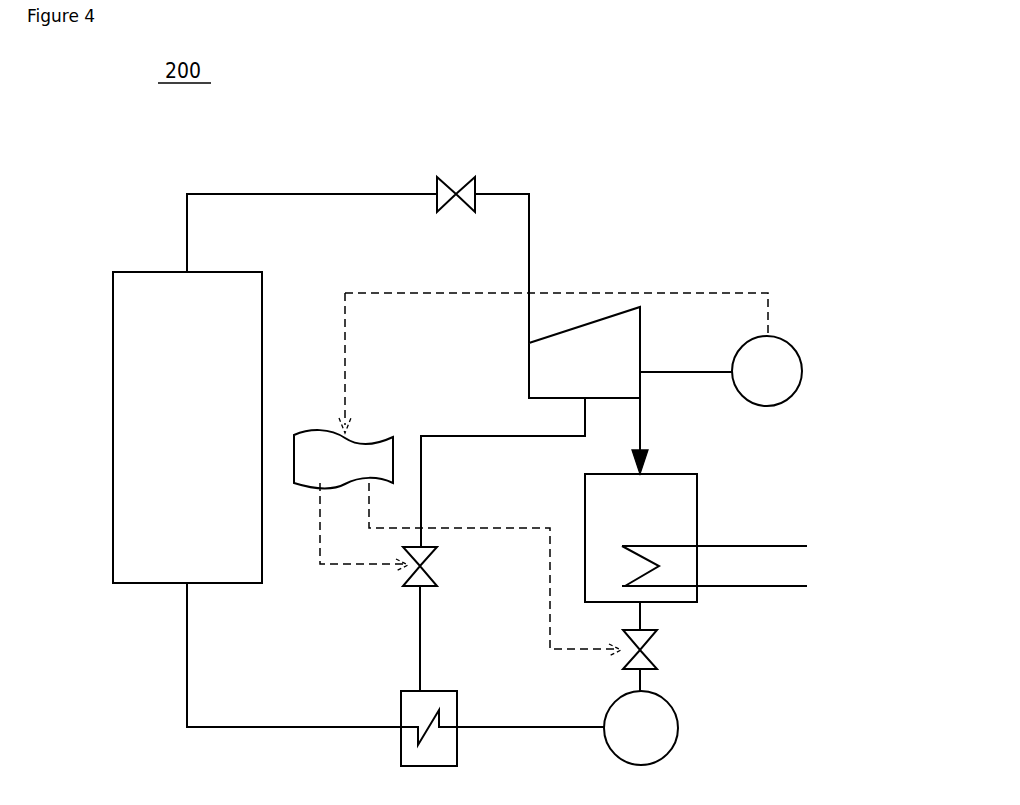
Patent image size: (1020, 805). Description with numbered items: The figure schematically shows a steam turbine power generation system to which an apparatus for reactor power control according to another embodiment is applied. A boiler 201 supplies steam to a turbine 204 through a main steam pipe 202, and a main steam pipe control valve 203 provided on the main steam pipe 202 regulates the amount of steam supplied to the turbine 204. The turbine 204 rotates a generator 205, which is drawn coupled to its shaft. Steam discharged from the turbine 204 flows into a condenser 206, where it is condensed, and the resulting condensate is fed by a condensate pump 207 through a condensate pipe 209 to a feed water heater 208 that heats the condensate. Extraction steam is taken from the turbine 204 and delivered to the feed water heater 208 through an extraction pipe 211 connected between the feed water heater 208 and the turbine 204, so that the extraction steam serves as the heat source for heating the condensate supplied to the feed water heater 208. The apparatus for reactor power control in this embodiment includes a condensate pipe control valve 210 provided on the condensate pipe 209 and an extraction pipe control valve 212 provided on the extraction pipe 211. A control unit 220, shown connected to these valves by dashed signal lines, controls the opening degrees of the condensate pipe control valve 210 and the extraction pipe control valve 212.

The boiler 201 is at (113, 425).
The main steam pipe 202 is at (310, 193).
The main steam pipe control valve 203 is at (448, 177).
The turbine 204 is at (641, 318).
The generator 205 is at (810, 366).
The condenser 206 is at (697, 491).
The condensate pump 207 is at (678, 725).
The feed water heater 208 is at (401, 705).
The condensate pipe 209 is at (641, 616).
The condensate pipe control valve 210 is at (653, 643).
The extraction pipe 211 is at (502, 436).
The extraction pipe control valve 212 is at (437, 552).
The control unit 220 is at (320, 430).